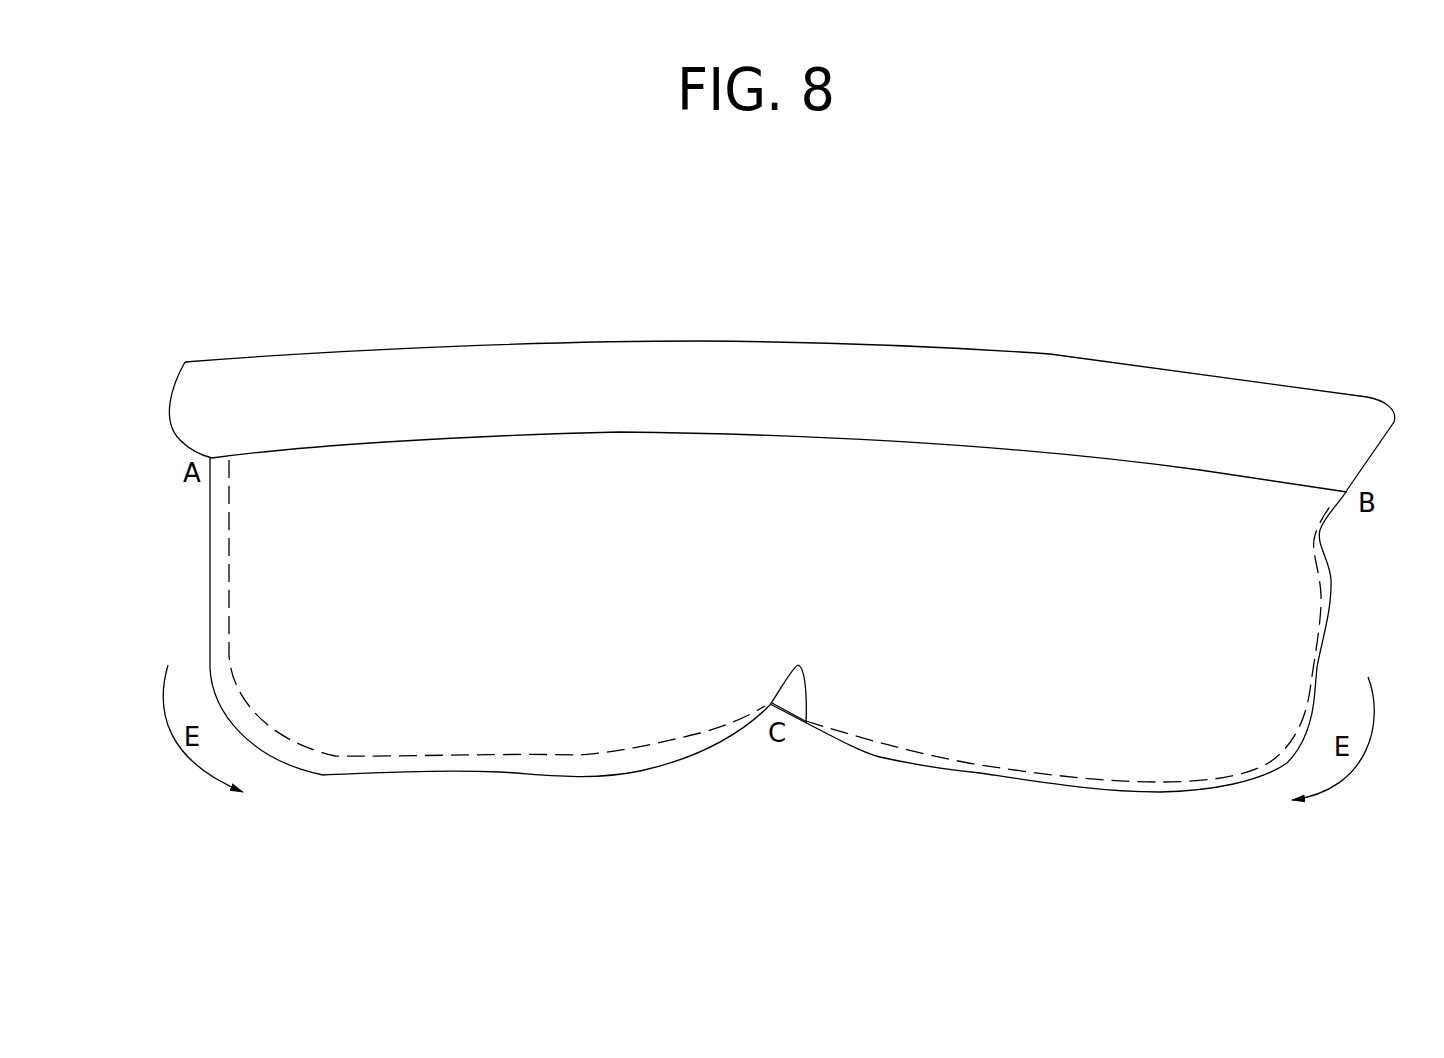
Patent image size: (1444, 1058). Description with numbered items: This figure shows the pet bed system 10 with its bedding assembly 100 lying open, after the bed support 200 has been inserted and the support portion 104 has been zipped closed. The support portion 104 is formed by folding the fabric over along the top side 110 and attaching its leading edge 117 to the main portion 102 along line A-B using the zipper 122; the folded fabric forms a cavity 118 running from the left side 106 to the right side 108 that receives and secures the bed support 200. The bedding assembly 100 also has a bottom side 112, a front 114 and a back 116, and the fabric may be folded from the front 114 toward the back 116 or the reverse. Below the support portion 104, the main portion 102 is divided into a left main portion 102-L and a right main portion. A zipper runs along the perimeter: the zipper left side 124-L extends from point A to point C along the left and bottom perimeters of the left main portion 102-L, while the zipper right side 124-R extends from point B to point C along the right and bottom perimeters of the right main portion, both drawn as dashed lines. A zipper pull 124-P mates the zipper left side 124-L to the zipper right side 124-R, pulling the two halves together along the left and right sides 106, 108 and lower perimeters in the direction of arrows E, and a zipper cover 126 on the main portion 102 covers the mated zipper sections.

The pet bed system 10 is at (257, 237).
The bedding assembly 100 is at (1003, 178).
The bed support 200 is at (1018, 390).
The support portion 104 is at (497, 387).
The top side 110 is at (657, 330).
The leading edge 117 is at (892, 430).
The cavity 118 is at (155, 405).
The zipper 122 is at (1335, 477).
The right side 108 is at (210, 600).
The left side 106 is at (1335, 645).
The back 116 is at (408, 613).
The left main portion 102-L is at (512, 602).
The zipper cover 126 is at (507, 758).
The zipper right side 124-R is at (562, 756).
The bottom side 112 is at (612, 778).
The zipper pull 124-P is at (806, 723).
The zipper left side 124-L is at (975, 765).
The main portion 102 is at (832, 608).
The front 114 is at (1300, 867).